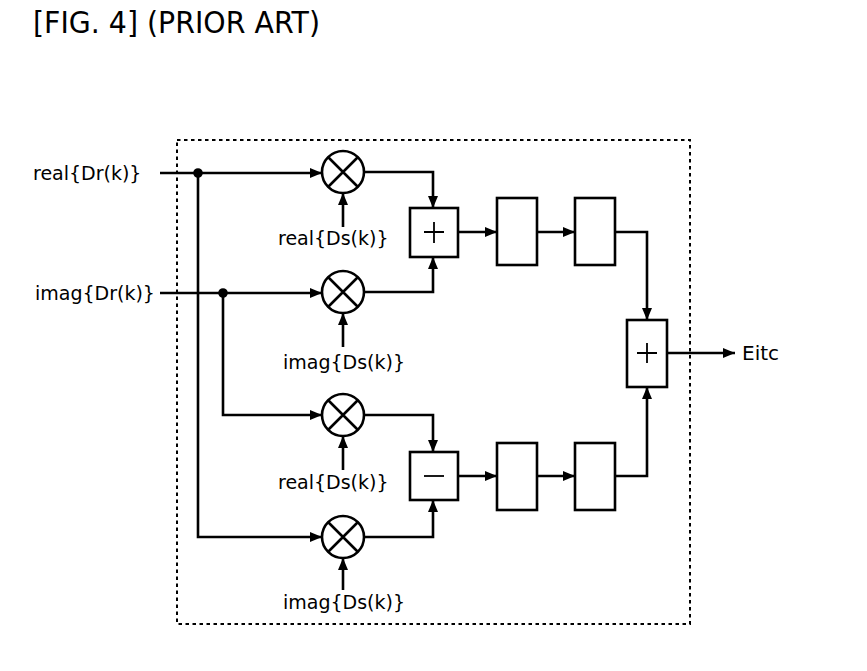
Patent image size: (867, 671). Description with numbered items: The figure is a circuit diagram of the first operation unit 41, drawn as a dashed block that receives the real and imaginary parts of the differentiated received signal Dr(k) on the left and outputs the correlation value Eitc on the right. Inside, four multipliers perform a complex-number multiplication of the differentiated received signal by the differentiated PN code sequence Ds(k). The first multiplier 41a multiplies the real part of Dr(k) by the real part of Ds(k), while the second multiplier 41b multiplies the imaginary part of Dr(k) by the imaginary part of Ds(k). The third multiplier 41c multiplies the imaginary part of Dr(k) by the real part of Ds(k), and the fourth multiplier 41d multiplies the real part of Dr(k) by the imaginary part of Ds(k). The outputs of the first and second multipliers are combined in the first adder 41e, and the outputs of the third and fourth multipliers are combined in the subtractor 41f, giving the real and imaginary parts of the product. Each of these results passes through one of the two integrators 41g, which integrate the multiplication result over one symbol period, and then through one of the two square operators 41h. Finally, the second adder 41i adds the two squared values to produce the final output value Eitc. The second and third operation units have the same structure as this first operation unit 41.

The first operation unit 41 is at (428, 139).
The first multiplier 41a is at (323, 178).
The second multiplier 41b is at (323, 298).
The third multiplier 41c is at (323, 420).
The fourth multiplier 41d is at (323, 542).
The first adder 41e is at (450, 258).
The subtractor 41f is at (450, 502).
The integrator 41g is at (517, 198).
The square operator 41h is at (595, 198).
The second adder 41i is at (627, 353).